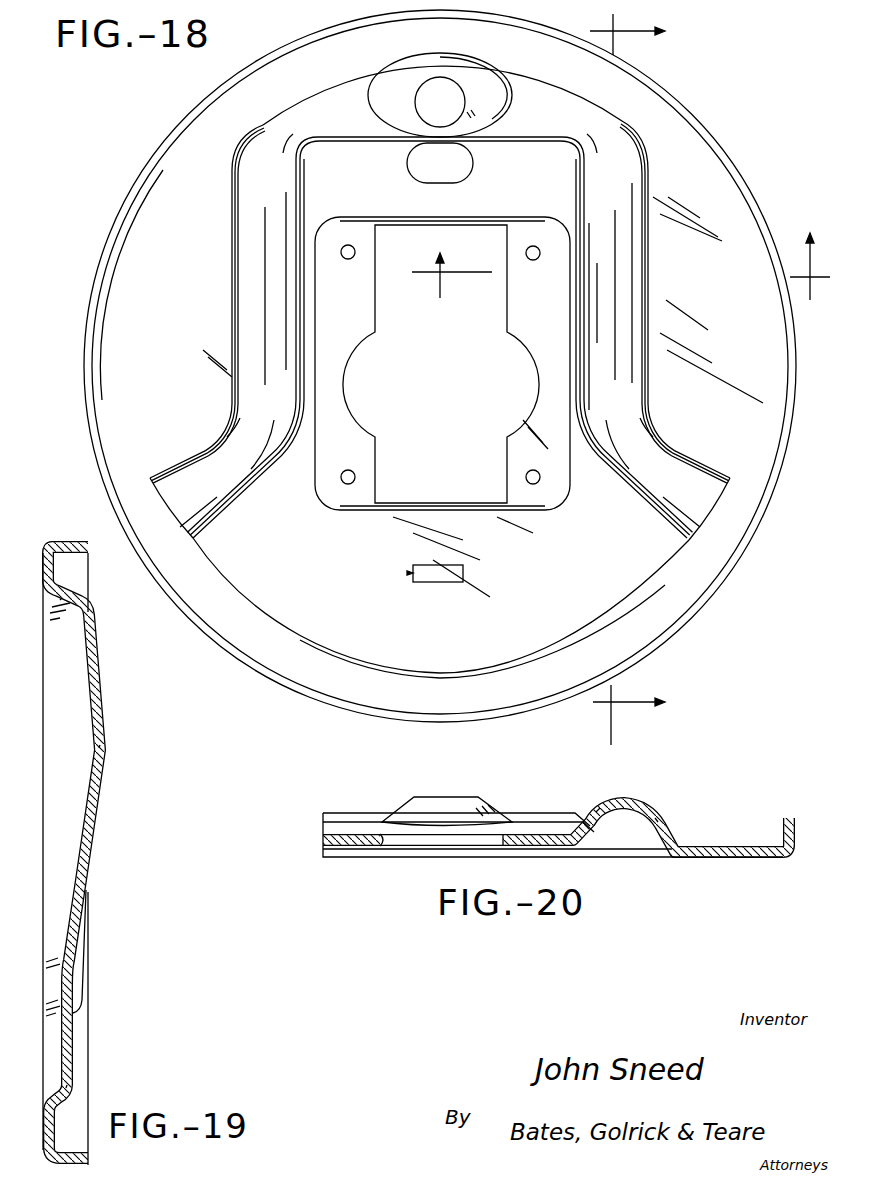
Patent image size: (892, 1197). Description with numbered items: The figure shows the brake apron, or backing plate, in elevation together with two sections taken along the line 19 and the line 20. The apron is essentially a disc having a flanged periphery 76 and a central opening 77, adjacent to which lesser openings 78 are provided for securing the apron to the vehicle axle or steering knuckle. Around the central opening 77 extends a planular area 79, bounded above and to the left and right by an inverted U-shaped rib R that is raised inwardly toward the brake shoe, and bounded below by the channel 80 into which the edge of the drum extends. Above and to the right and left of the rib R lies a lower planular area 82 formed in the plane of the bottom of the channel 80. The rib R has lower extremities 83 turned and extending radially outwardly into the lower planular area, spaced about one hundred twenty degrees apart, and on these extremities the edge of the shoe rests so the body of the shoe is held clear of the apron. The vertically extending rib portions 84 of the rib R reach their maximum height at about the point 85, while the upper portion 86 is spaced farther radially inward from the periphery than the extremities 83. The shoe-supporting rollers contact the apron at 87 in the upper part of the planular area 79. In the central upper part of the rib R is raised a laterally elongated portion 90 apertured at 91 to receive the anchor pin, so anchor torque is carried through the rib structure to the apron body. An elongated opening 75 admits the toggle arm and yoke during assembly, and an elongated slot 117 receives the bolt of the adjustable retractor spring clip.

In FIG. 18, the flanged periphery 76 is at (700, 126).
In FIG. 19, the flanged periphery 76 is at (84, 548).
In FIG. 20, the flanged periphery 76 is at (792, 825).
In FIG. 18, the channel 80 is at (343, 688).
In FIG. 19, the channel 80 is at (55, 1125).
In FIG. 18, the lower planular area 82 is at (431, 286).
In FIG. 20, the lower planular area 82 is at (745, 855).
In FIG. 18, the lower extremities of the rib 83 is at (198, 487).
In FIG. 19, the lower extremities of the rib 83 is at (75, 985).
In FIG. 18, the outer rib 84 is at (265, 251).
In FIG. 19, the outer rib 84 is at (86, 843).
In FIG. 20, the outer rib 84 is at (655, 816).
In FIG. 18, the point of maximum rib height 85 is at (265, 263).
In FIG. 19, the point of maximum rib height 85 is at (106, 755).
In FIG. 20, the point of maximum rib height 85 is at (630, 793).
In FIG. 18, the upper rib portion 86 is at (442, 95).
In FIG. 20, the upper rib portion 86 is at (540, 830).
In FIG. 18, the roller contact area 87 is at (440, 337).
In FIG. 18, the elongated opening 75 is at (472, 163).
In FIG. 18, the laterally elongated portion 90 is at (440, 95).
In FIG. 20, the laterally elongated portion 90 is at (466, 798).
In FIG. 18, the aperture 91 is at (418, 101).
In FIG. 18, the central opening 77 is at (363, 339).
In FIG. 20, the central opening 77 is at (390, 846).
In FIG. 18, the lesser openings 78 is at (355, 255).
In FIG. 18, the planular area 79 is at (441, 597).
In FIG. 18, the elongated slot 117 is at (445, 582).
In FIG. 18, the inverted U-shaped rib R is at (250, 323).
In FIG. 18, the section line 19— 19 is at (640, 379).
In FIG. 18, the section line 20— 20 is at (621, 256).